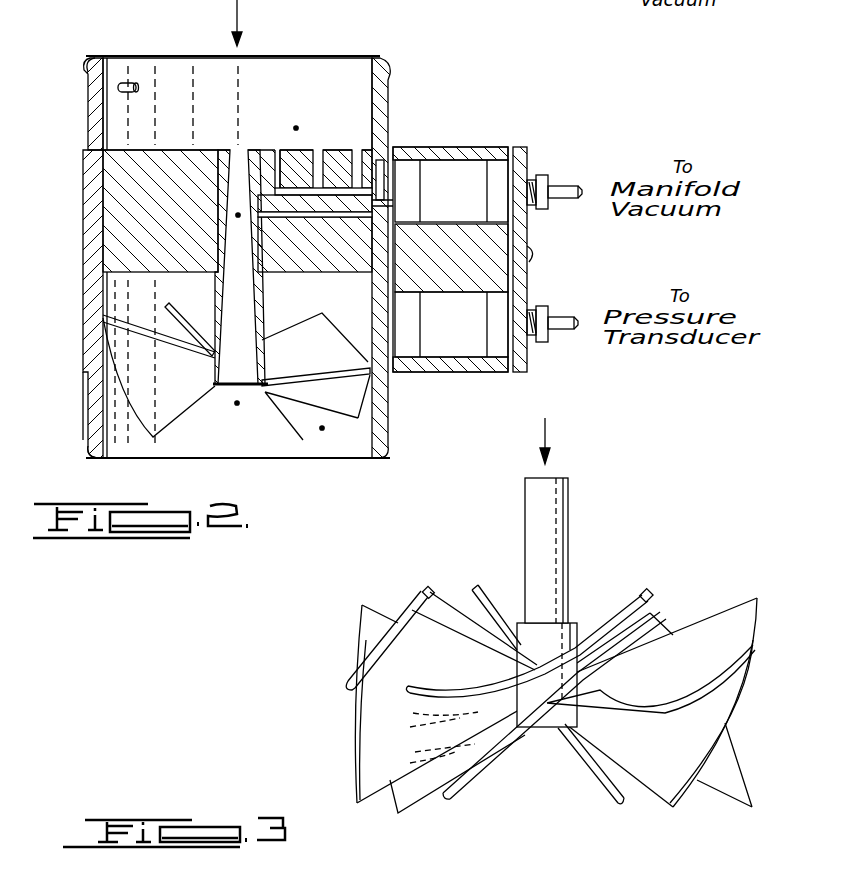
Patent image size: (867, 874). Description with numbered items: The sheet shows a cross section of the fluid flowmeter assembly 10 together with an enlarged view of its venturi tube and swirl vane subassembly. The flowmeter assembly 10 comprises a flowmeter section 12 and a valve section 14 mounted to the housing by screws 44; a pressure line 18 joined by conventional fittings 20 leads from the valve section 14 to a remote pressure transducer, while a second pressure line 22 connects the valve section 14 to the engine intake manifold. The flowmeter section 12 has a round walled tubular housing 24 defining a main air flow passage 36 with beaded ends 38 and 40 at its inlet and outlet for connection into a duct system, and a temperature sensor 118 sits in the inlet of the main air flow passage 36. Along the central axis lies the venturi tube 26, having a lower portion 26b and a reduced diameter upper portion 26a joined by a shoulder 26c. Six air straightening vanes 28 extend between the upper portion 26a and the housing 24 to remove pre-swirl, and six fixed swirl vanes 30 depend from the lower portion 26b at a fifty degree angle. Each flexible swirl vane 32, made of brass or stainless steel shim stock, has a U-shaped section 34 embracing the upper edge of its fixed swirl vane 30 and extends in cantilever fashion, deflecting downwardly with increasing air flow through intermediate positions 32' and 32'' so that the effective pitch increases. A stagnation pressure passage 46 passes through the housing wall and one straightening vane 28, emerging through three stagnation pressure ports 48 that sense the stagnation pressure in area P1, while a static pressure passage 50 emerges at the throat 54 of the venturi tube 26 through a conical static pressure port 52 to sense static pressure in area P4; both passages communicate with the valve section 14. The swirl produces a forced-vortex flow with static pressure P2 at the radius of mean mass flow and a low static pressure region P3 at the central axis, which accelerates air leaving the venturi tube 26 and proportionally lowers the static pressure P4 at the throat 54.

In FIG. 2, the fluid flowmeter assembly 10 is at (413, 105).
In FIG. 2, the flowmeter section 12 is at (88, 97).
In FIG. 2, the valve section 14 is at (478, 148).
In FIG. 2, the pressure line 18 is at (568, 187).
In FIG. 2, the fittings 20 is at (546, 178).
In FIG. 2, the second pressure line 22 is at (565, 318).
In FIG. 2, the tubular housing 24 is at (92, 400).
In FIG. 2, the venturi tube 26 is at (240, 180).
In FIG. 3, the venturi tube 26 is at (573, 482).
In FIG. 3, the reduced diameter upper portion 26a is at (573, 516).
In FIG. 3, the lower portion 26b is at (577, 648).
In FIG. 3, the shoulder 26c is at (577, 632).
In FIG. 2, the air straightening vanes 28 is at (120, 150).
In FIG. 2, the swirl vanes 30 is at (120, 344).
In FIG. 3, the swirl vanes 30 is at (366, 632).
In FIG. 2, the flexible swirl vanes 32 is at (270, 342).
In FIG. 3, the flexible swirl vanes 32 is at (518, 680).
In FIG. 3, the intermediate position 32' is at (432, 711).
In FIG. 3, the intermediate position 32'' is at (426, 748).
In FIG. 3, the U-shaped section 34 is at (428, 588).
In FIG. 2, the main air flow passage 36 is at (340, 62).
In FIG. 2, the beaded end 38 is at (84, 64).
In FIG. 2, the beaded end 40 is at (88, 456).
In FIG. 2, the screws 44 is at (533, 252).
In FIG. 2, the stagnation pressure passage 46 is at (381, 192).
In FIG. 2, the stagnation pressure ports 48 is at (320, 148).
In FIG. 2, the static pressure passage 50 is at (346, 212).
In FIG. 2, the static pressure port 52 is at (263, 215).
In FIG. 2, the throat 54 is at (277, 152).
In FIG. 2, the temperature sensor 118 is at (128, 83).
In FIG. 2, the stagnation pressure area P1 is at (297, 126).
In FIG. 2, the static pressure at radius of mean mass flow P2 is at (322, 428).
In FIG. 2, the low static pressure region P3 is at (236, 405).
In FIG. 2, the static pressure area P4 is at (238, 215).